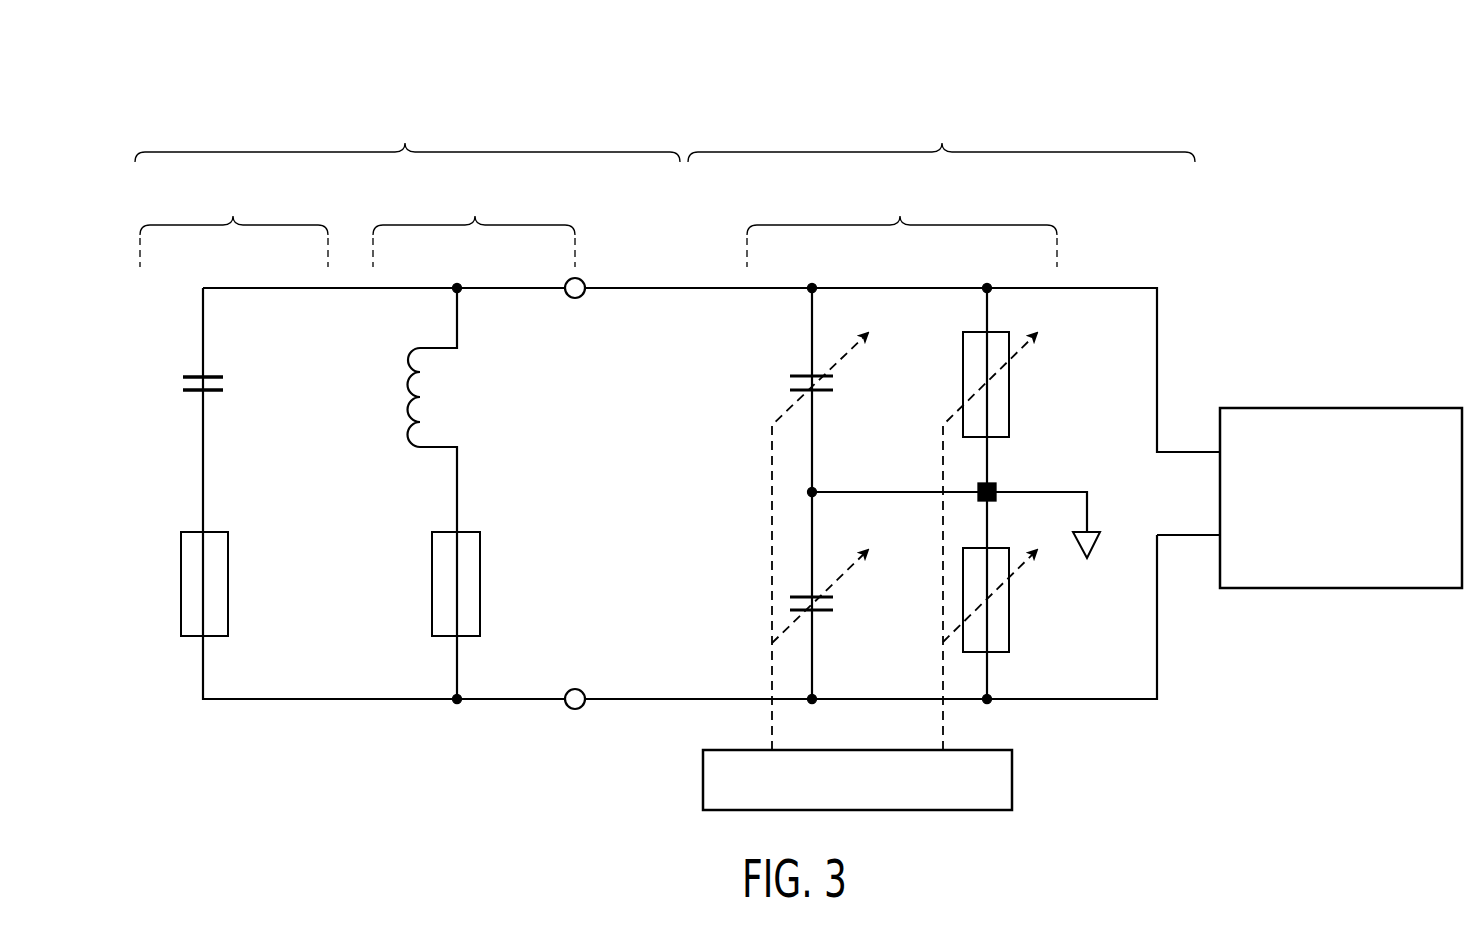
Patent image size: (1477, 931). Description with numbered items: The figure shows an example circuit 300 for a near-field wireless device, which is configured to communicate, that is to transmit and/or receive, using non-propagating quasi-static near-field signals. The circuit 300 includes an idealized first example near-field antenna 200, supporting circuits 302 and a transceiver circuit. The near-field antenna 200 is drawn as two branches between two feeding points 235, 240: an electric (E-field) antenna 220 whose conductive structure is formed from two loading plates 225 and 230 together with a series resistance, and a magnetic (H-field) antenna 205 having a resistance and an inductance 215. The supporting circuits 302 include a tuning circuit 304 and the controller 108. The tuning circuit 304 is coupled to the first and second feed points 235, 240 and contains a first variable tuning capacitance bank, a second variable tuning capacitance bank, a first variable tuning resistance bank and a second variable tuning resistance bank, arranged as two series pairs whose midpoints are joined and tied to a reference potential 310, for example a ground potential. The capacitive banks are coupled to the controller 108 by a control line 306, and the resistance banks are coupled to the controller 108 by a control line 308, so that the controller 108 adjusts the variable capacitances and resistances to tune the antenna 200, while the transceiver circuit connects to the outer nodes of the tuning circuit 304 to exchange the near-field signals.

The circuit 300 is at (169, 88).
The first example near-field antenna 200 is at (407, 135).
The electric (E-field) antenna 220 is at (234, 407).
The magnetic (H-field) antenna 205 is at (474, 407).
The inductor L1 215 is at (426, 396).
The loading plate 225 is at (210, 373).
The loading plate 230 is at (213, 395).
The feeding point 235 is at (575, 298).
The feeding point 240 is at (578, 689).
The supporting circuits 302 is at (941, 135).
The tuning circuit 304 is at (917, 438).
The control line 306 is at (772, 465).
The control line 308 is at (940, 455).
The reference potential 310 is at (1090, 556).
The controller 108 is at (1012, 780).